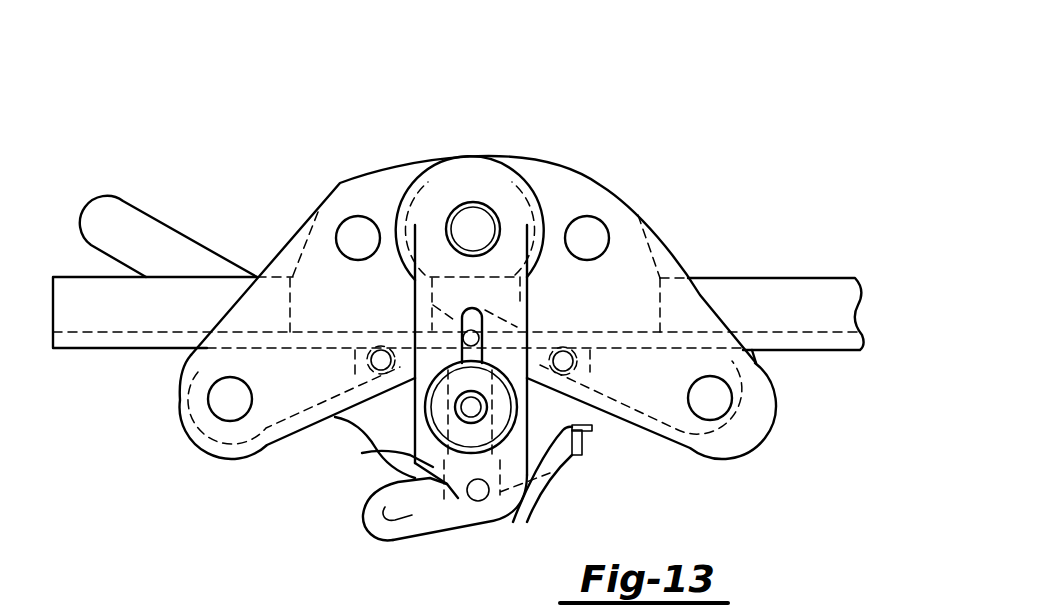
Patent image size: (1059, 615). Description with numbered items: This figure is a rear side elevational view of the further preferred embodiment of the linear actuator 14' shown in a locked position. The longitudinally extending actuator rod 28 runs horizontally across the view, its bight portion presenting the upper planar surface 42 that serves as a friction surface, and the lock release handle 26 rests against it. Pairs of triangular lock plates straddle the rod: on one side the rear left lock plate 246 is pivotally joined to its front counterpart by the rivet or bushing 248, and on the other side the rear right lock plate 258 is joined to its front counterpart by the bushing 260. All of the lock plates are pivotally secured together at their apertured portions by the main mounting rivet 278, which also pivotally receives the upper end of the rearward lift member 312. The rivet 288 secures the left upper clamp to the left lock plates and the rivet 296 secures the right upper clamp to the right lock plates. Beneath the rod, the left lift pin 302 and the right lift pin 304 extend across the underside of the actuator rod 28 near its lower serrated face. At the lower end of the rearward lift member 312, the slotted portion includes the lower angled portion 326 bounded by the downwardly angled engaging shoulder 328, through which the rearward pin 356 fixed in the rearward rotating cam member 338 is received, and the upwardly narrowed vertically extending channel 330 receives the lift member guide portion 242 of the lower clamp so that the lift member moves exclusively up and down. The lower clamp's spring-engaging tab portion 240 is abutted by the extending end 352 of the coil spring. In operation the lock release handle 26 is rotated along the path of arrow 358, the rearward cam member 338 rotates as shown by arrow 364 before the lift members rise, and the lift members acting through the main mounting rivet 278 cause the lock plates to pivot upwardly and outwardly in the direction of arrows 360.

The linear actuator 14' is at (214, 55).
The lock release handle 26 is at (217, 193).
The actuator rod 28 is at (87, 275).
The upper planar surface 42 is at (130, 345).
The spring-engaging tab portion 240 is at (558, 476).
The lift member guide portion 242 is at (463, 335).
The rear left lock plate 246 is at (710, 242).
The rivet or bushing 248 is at (718, 405).
The rear right lock plate 258 is at (284, 268).
The bushing 260 is at (227, 408).
The main mounting rivet 278 is at (480, 232).
The rivet 288 is at (593, 235).
The rivet 296 is at (355, 230).
The left lift pin 302 is at (570, 362).
The right lift pin 304 is at (380, 362).
The rearward lift member 312 is at (513, 248).
The lower angled portion 326 is at (403, 510).
The downwardly angled engaging shoulder 328 is at (390, 457).
The vertically extending channel 330 is at (483, 312).
The rearward rotating cam member 338 is at (503, 475).
The extending end 352 is at (592, 427).
The rearward pin 356 is at (474, 500).
The arrow 358 is at (157, 183).
The arrow 360 is at (403, 162).
The arrow 364 is at (440, 490).